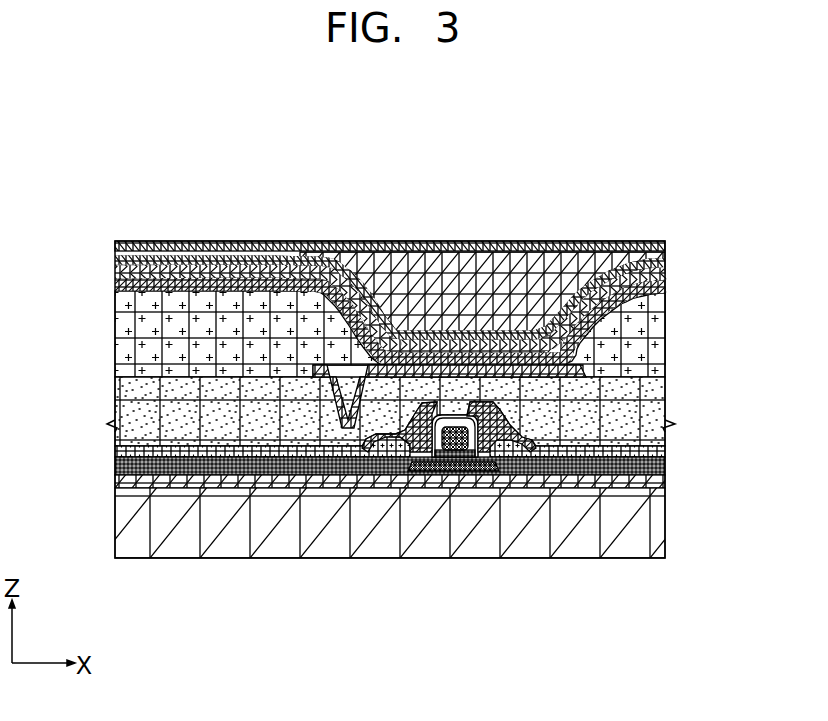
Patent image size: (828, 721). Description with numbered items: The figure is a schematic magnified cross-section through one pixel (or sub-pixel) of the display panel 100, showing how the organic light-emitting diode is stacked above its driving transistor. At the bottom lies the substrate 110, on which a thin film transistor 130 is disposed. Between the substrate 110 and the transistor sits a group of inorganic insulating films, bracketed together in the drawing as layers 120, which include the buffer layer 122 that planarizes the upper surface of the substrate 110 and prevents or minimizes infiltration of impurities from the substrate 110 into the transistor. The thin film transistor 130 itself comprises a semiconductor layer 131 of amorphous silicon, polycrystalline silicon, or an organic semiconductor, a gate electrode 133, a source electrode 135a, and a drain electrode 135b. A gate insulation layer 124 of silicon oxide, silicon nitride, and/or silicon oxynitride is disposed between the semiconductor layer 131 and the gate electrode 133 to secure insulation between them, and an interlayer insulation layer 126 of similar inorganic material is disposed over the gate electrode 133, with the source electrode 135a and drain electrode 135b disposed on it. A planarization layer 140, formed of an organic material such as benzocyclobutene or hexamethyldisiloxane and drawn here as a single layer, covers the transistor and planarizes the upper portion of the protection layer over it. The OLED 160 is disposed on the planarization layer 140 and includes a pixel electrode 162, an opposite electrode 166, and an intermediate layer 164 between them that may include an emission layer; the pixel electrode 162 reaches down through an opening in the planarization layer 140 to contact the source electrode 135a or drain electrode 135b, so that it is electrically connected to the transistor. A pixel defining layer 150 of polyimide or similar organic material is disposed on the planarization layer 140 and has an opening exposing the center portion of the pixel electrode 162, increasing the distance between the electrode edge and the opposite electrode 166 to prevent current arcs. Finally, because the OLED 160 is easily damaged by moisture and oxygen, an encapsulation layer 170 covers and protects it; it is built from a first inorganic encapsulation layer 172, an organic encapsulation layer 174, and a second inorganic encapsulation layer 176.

The display panel 100 is at (390, 398).
The substrate 110 is at (612, 530).
The buffer layer stack 120 is at (390, 547).
The buffer layer 122 is at (247, 482).
The gate insulation layer 124 is at (200, 470).
The interlayer insulation layer 126 is at (150, 457).
The thin film transistor 130 is at (472, 531).
The semiconductor layer 131 is at (437, 466).
The gate electrode 133 is at (460, 442).
The source electrode 135a is at (529, 511).
The drain electrode 135b is at (403, 418).
The planarization layer 140 is at (645, 388).
The pixel defining layer 150 is at (647, 326).
The OLED 160 is at (426, 275).
The pixel electrode 162 is at (512, 370).
The intermediate layer 164 is at (472, 355).
The opposite electrode 166 is at (430, 348).
The encapsulation layer 170 is at (426, 256).
The first inorganic encapsulation layer 172 is at (347, 270).
The organic encapsulation layer 174 is at (300, 259).
The second inorganic encapsulation layer 176 is at (367, 174).